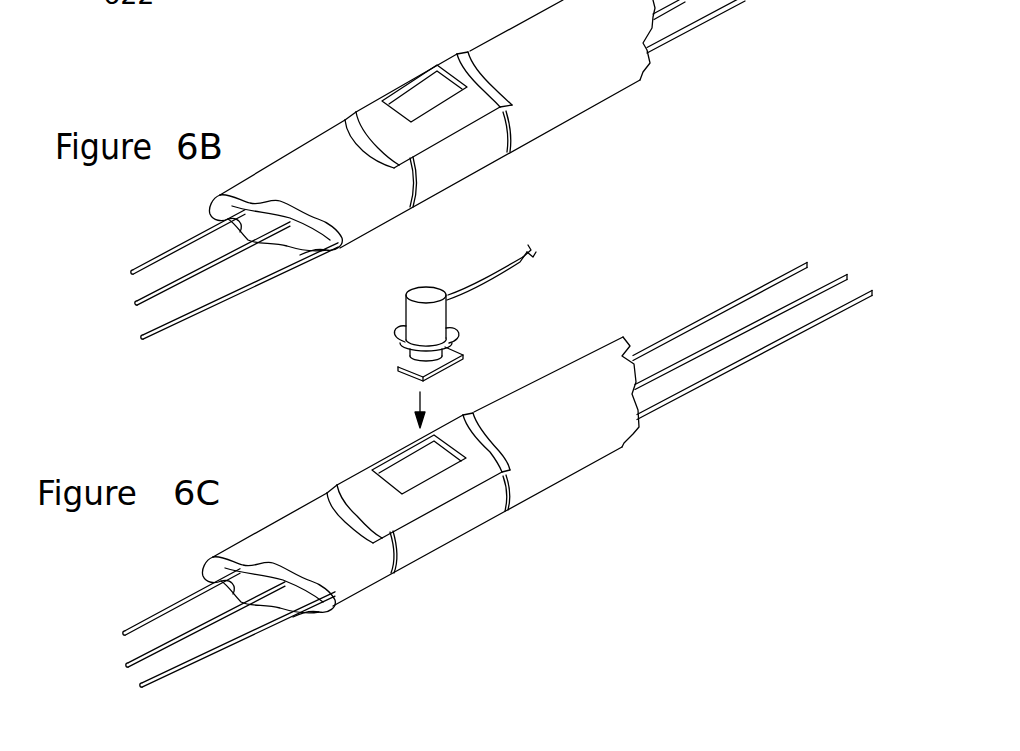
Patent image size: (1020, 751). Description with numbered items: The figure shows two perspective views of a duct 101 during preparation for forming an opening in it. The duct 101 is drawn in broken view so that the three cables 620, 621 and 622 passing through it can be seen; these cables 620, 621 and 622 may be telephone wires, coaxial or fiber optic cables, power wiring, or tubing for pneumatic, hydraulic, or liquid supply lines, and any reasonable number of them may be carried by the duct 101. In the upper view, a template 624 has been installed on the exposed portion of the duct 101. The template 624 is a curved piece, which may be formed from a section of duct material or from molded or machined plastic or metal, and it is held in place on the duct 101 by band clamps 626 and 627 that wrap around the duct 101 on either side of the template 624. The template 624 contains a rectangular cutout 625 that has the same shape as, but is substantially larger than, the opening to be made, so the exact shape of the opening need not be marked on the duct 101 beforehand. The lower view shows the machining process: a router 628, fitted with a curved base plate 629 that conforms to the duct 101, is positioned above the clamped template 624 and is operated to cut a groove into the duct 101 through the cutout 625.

In FIG. 6B, the duct 101 is at (641, 81).
In FIG. 6C, the duct 101 is at (621, 445).
In FIG. 6B, the cable 620 is at (142, 264).
In FIG. 6C, the cable 620 is at (138, 624).
In FIG. 6B, the cable 621 is at (138, 297).
In FIG. 6C, the cable 621 is at (137, 656).
In FIG. 6B, the cable 622 is at (146, 325).
In FIG. 6C, the cable 622 is at (148, 676).
In FIG. 6B, the template 624 is at (507, 79).
In FIG. 6C, the template 624 is at (507, 455).
In FIG. 6B, the cutout 625 is at (430, 88).
In FIG. 6B, the band clamp 626 is at (413, 206).
In FIG. 6C, the band clamp 626 is at (392, 571).
In FIG. 6B, the band clamp 627 is at (510, 151).
In FIG. 6C, the band clamp 627 is at (504, 510).
In FIG. 6C, the router 628 is at (448, 313).
In FIG. 6C, the curved base plate 629 is at (410, 373).